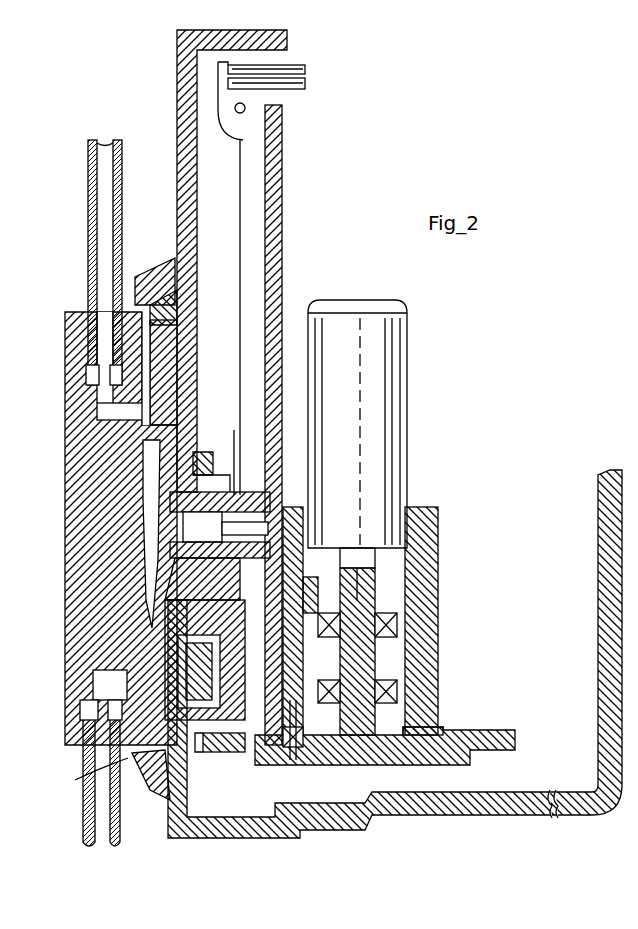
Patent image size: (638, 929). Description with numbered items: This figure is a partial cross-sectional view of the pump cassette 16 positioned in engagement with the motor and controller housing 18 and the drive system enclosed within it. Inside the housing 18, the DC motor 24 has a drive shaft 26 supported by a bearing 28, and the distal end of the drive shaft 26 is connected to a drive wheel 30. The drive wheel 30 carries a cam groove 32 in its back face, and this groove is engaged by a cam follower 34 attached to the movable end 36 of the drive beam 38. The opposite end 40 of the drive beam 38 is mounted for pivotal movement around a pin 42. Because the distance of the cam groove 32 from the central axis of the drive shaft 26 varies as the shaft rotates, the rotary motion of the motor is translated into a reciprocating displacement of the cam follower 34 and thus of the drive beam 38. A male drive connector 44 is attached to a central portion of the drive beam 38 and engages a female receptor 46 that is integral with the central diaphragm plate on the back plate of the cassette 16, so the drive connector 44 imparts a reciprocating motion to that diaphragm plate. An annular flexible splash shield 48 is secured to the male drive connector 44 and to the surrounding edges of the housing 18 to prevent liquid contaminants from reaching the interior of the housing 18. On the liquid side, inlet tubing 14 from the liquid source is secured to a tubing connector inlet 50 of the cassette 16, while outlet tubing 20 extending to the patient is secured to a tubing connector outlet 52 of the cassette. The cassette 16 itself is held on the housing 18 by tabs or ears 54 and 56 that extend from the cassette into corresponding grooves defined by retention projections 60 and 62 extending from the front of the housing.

The inlet tubing 14 is at (88, 252).
The pump cassette 16 is at (60, 456).
The motor and controller housing 18 is at (384, 815).
The outlet tubing 20 is at (84, 815).
The DC motor 24 is at (360, 408).
The drive shaft 26 is at (375, 668).
The bearing 28 is at (400, 690).
The drive wheel 30 is at (468, 765).
The cam groove 32 is at (416, 738).
The cam follower 34 is at (288, 752).
The movable end 36 is at (232, 752).
The drive beam 38 is at (294, 273).
The opposite end 40 is at (290, 90).
The pin 42 is at (235, 108).
The male drive connector 44 is at (182, 546).
The female receptor 46 is at (175, 496).
The annular flexible splash shield 48 is at (222, 452).
The tubing connector inlet 50 is at (92, 357).
The tubing connector outlet 52 is at (85, 727).
The tab 54 is at (185, 298).
The tab 56 is at (140, 775).
The retention projection 60 is at (152, 270).
The retention projection 62 is at (89, 776).